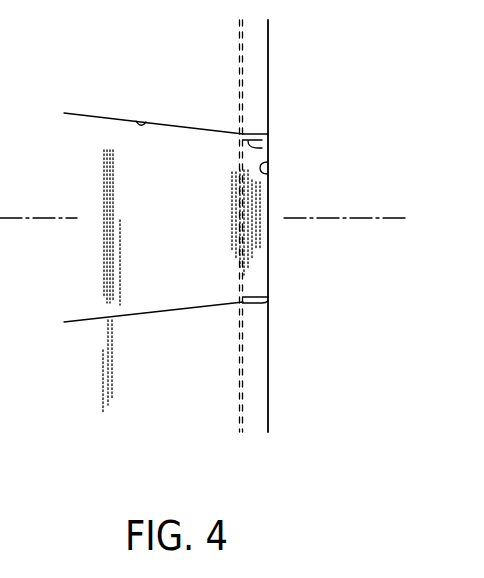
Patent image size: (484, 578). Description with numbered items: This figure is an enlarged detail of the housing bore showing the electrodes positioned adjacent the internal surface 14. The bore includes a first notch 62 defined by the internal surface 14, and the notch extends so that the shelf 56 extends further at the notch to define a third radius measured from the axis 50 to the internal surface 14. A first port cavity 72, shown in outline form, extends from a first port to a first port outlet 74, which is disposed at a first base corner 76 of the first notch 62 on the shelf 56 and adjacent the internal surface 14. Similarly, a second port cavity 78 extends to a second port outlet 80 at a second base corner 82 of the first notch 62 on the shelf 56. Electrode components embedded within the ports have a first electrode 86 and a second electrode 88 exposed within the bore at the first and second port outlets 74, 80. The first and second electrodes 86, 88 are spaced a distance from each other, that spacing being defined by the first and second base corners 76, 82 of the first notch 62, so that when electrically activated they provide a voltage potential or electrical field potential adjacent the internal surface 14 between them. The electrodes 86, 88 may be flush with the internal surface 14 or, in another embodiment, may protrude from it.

The internal surface 14 is at (80, 125).
The axis 50 is at (396, 218).
The shelf 56 is at (268, 174).
The first notch 62 is at (141, 118).
The first port cavity 72 is at (238, 43).
The first port outlet 74 is at (241, 133).
The first base corner 76 is at (270, 136).
The second port cavity 78 is at (238, 397).
The second port outlet 80 is at (243, 299).
The second base corner 82 is at (268, 301).
The first electrode 86 is at (258, 148).
The second electrode 88 is at (250, 297).